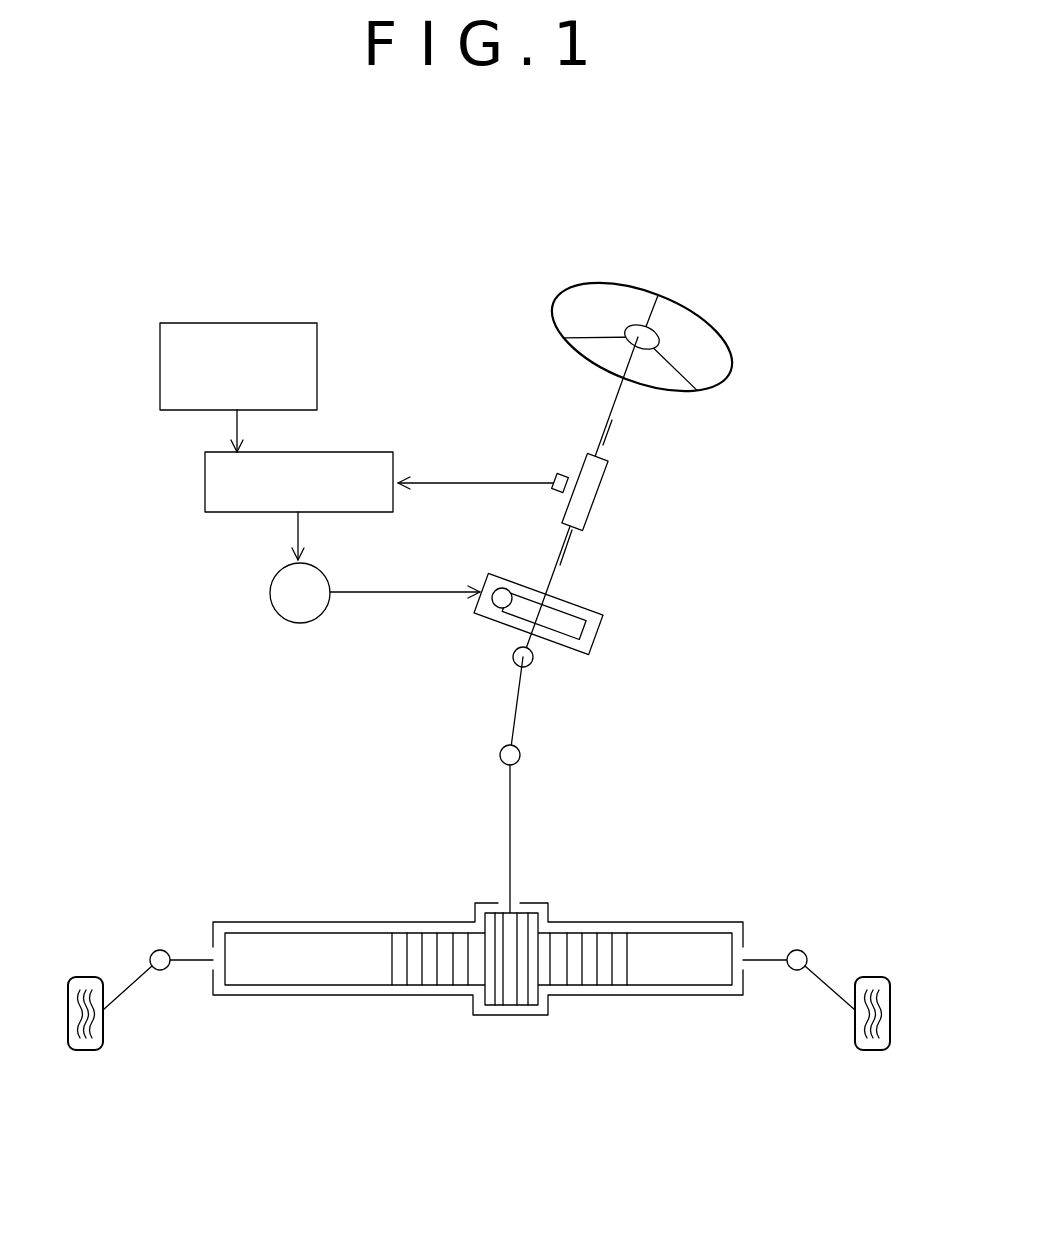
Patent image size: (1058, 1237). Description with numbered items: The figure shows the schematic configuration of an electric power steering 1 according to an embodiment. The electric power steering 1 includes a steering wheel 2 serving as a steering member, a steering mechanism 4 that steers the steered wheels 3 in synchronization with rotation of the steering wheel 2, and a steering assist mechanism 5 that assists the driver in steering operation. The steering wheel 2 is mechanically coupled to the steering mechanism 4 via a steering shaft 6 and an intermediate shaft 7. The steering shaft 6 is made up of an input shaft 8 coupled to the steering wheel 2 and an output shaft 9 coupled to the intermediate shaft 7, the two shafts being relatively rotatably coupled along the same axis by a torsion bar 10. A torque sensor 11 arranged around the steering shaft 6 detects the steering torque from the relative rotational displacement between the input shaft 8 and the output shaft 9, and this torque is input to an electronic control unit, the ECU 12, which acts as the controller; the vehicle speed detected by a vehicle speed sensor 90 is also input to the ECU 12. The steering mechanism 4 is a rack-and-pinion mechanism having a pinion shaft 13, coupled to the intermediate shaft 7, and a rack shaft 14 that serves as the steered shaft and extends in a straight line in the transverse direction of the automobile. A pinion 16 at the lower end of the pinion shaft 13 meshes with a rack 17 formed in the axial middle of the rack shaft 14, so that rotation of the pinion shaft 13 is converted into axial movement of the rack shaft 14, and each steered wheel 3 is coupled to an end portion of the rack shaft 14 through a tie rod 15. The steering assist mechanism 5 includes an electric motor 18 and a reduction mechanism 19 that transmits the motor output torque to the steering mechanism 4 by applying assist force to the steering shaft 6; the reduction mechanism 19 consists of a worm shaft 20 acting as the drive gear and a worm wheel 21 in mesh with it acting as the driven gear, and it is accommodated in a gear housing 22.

The electric power steering 1 is at (395, 328).
The steering wheel 2 is at (641, 290).
The steered wheels 3 is at (82, 978).
The steering mechanism 4 is at (688, 905).
The steering assist mechanism 5 is at (382, 690).
The steering shaft 6 is at (620, 405).
The intermediate shaft 7 is at (515, 722).
The input shaft 8 is at (605, 440).
The output shaft 9 is at (565, 555).
The torsion bar 10 is at (585, 495).
The torque sensor 11 is at (558, 477).
The electronic control unit (ECU) 12 is at (352, 465).
The pinion shaft 13 is at (512, 838).
The rack shaft 14 is at (678, 988).
The tie rod 15 is at (135, 985).
The pinion 16 is at (510, 1010).
The rack 17 is at (415, 990).
The electric motor 18 is at (298, 613).
The reduction mechanism 19 is at (612, 602).
The worm shaft 20 is at (498, 607).
The worm wheel 21 is at (575, 625).
The gear housing 22 is at (560, 648).
The vehicle speed sensor 90 is at (210, 322).